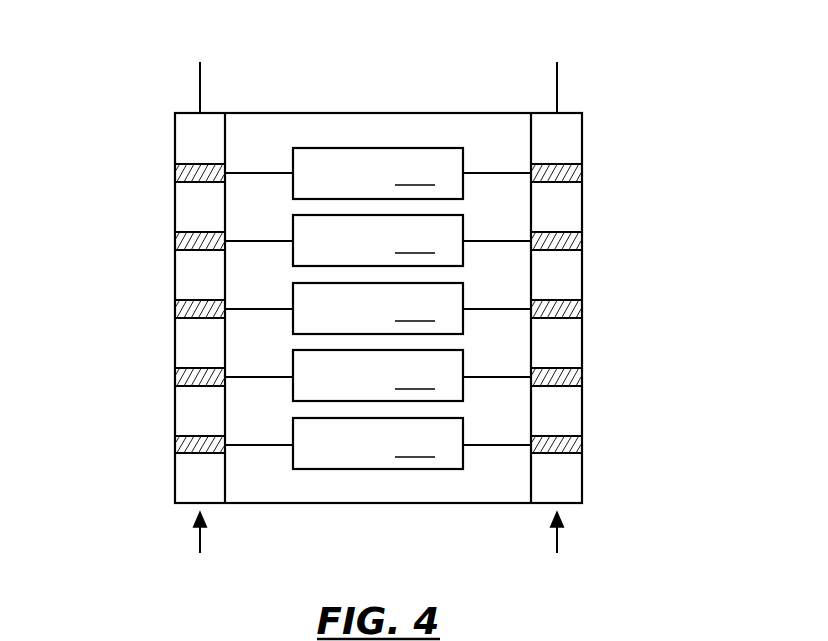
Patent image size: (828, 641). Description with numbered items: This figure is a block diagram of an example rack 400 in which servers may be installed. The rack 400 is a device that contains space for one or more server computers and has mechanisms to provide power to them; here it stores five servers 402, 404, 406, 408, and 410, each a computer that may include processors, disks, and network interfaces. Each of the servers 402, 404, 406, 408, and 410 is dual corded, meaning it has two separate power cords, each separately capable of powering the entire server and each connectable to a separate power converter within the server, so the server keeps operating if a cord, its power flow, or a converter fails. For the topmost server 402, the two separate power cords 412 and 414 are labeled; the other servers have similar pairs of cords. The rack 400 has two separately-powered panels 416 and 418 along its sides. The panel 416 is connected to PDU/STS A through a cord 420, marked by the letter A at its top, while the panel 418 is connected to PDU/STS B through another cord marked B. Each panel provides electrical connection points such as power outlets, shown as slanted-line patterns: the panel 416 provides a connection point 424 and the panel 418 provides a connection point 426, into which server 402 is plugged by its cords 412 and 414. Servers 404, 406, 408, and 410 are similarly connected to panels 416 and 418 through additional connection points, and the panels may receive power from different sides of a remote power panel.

The rack 400 is at (428, 113).
The server 402 is at (378, 173).
The server 404 is at (378, 240).
The server 406 is at (378, 308).
The server 408 is at (378, 375).
The server 410 is at (378, 443).
The power cord 412 is at (260, 182).
The power cord 414 is at (495, 182).
The panel 416 is at (200, 548).
The panel 418 is at (557, 548).
The cord 420 is at (192, 80).
The connection point 424 is at (192, 163).
The connection point 426 is at (557, 163).